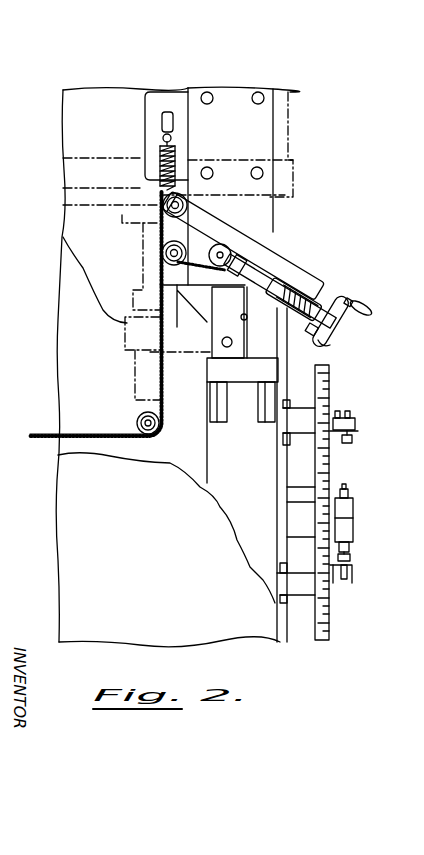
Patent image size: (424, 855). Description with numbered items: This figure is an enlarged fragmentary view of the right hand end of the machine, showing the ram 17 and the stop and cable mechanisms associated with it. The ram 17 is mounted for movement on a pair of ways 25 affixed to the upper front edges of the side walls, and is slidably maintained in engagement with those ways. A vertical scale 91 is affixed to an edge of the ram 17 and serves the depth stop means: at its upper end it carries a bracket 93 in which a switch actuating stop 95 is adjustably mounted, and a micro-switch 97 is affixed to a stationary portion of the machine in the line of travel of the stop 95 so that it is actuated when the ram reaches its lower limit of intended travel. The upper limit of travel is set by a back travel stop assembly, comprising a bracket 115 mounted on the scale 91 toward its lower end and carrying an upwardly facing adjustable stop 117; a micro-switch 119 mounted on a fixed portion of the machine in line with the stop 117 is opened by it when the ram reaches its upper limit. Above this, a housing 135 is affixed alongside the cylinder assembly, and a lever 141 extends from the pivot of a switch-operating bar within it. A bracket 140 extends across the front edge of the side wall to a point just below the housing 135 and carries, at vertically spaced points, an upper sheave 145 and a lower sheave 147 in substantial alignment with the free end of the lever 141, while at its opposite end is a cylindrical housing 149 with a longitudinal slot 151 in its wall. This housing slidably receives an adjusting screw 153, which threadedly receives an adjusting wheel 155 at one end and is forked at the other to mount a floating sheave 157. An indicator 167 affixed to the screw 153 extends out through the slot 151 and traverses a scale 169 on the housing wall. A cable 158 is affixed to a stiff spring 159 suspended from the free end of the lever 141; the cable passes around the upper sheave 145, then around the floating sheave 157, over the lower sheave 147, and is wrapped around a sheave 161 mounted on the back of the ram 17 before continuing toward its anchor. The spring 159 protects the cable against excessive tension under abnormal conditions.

The housing 135 is at (150, 108).
The lever 141 is at (174, 122).
The spring 159 is at (158, 165).
The upper sheave 145 is at (190, 197).
The lower sheave 147 is at (162, 253).
The floating sheave 157 is at (232, 255).
The bracket 140 is at (282, 254).
The adjusting screw 153 is at (258, 281).
The cylindrical housing 149 is at (300, 280).
The indicator 167 is at (323, 290).
The longitudinal slot 151 is at (332, 298).
The adjusting wheel 155 is at (330, 344).
The ways 25 is at (234, 308).
The scale 169 is at (247, 318).
The ram 17 is at (287, 368).
The vertical scale 91 is at (330, 462).
The bracket 93 is at (340, 412).
The switch actuating stop 95 is at (355, 440).
The micro-switch 97 is at (348, 504).
The micro-switch 119 is at (345, 532).
The adjustable stop 117 is at (352, 558).
The bracket 115 is at (353, 566).
The cable 158 is at (80, 432).
The sheave 161 is at (159, 430).